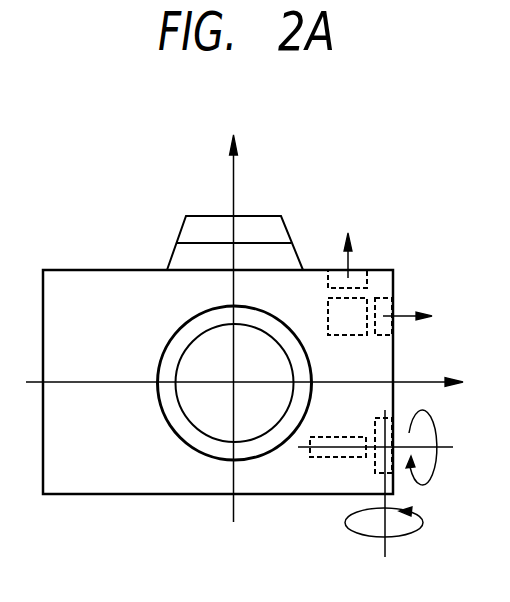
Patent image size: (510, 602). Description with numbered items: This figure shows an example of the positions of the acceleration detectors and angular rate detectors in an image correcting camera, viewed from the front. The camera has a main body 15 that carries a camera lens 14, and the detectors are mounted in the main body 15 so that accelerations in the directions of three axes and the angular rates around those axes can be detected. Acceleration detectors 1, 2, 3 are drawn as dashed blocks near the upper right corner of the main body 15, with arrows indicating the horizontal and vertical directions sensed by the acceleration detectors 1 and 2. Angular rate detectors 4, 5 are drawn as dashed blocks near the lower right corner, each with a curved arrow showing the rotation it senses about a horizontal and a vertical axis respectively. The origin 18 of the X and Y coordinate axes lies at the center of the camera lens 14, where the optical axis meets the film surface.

The acceleration detector 1 is at (388, 327).
The acceleration detector 2 is at (360, 274).
The acceleration detector 3 is at (362, 307).
The angular rate detector 4 is at (327, 455).
The angular rate detector 5 is at (393, 468).
The camera lens 14 is at (178, 437).
The main body 15 is at (92, 480).
The origin 18 is at (232, 385).